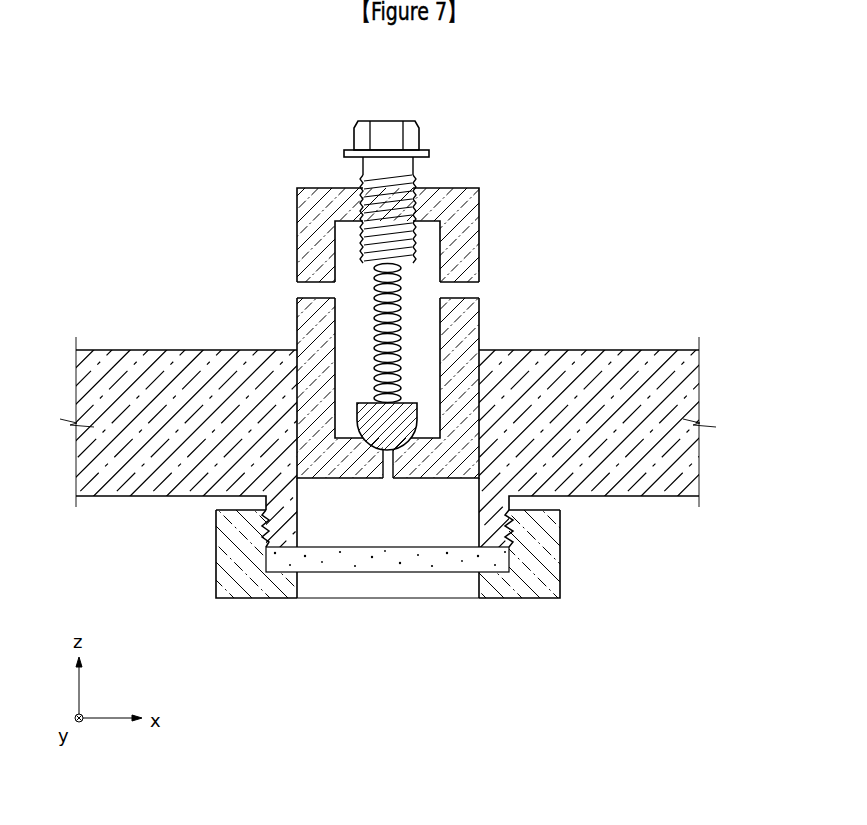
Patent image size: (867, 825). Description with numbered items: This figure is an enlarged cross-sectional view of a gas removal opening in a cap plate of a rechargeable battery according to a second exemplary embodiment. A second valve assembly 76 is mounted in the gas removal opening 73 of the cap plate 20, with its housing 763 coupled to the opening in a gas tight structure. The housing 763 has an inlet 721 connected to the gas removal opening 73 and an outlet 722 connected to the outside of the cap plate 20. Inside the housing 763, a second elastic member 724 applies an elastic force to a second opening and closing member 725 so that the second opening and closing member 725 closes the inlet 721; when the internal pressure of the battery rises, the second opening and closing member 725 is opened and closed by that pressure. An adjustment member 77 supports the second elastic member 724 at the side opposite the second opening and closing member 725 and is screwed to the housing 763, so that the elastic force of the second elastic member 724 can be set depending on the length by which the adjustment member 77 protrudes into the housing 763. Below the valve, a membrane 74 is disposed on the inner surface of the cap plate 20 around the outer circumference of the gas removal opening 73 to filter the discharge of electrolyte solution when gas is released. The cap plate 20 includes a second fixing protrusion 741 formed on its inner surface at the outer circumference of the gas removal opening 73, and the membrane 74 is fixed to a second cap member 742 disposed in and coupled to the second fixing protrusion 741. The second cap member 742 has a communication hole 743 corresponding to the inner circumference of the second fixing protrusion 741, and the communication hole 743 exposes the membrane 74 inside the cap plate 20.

The cap plate 20 is at (683, 380).
The gas removal opening 73 is at (438, 515).
The membrane 74 is at (322, 558).
The second valve assembly 76 is at (286, 140).
The adjustment member 77 is at (413, 135).
The inlet 721 is at (388, 478).
The outlet 722 is at (468, 289).
The second elastic member 724 is at (380, 264).
The second opening and closing member 725 is at (396, 428).
The second fixing protrusion 741 is at (512, 523).
The second cap member 742 is at (545, 575).
The communication hole 743 is at (457, 590).
The housing 763 is at (467, 225).